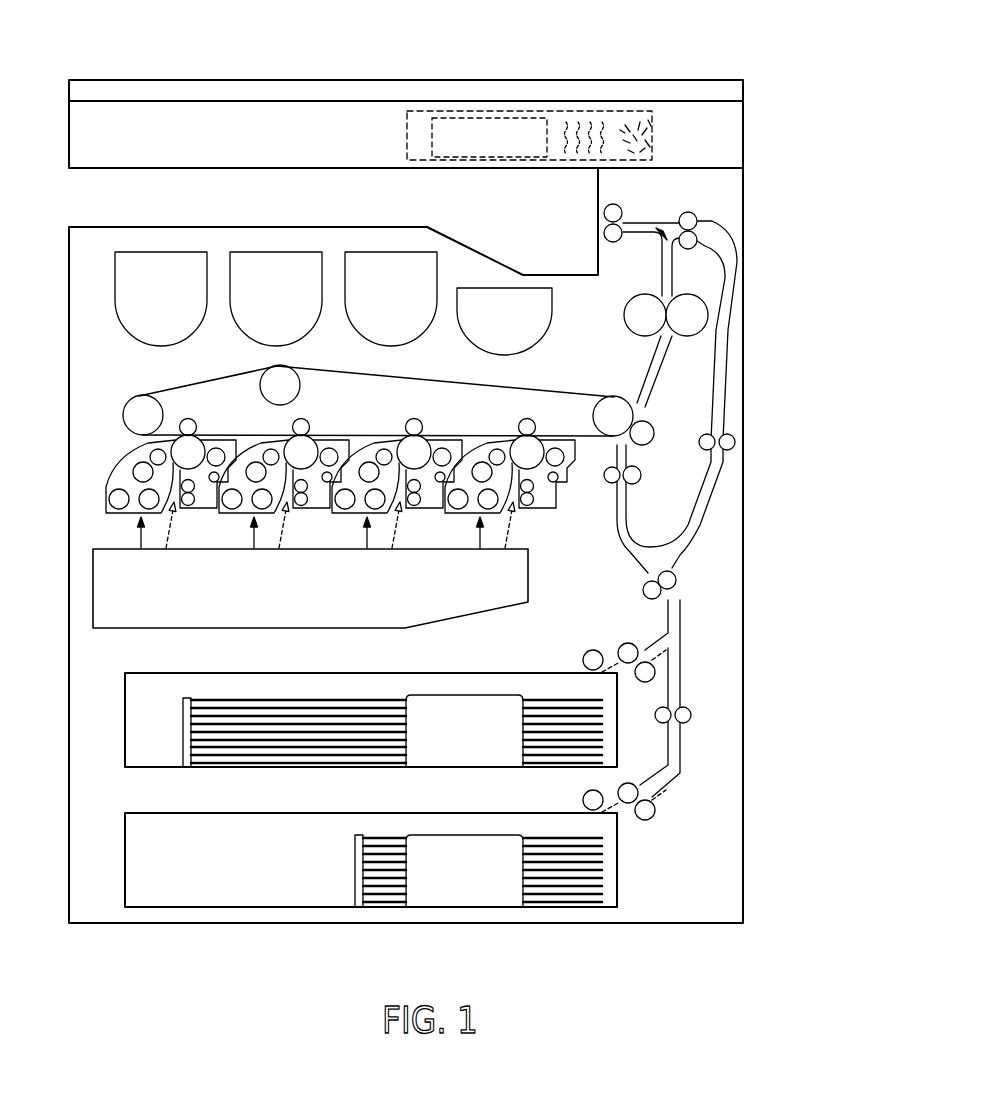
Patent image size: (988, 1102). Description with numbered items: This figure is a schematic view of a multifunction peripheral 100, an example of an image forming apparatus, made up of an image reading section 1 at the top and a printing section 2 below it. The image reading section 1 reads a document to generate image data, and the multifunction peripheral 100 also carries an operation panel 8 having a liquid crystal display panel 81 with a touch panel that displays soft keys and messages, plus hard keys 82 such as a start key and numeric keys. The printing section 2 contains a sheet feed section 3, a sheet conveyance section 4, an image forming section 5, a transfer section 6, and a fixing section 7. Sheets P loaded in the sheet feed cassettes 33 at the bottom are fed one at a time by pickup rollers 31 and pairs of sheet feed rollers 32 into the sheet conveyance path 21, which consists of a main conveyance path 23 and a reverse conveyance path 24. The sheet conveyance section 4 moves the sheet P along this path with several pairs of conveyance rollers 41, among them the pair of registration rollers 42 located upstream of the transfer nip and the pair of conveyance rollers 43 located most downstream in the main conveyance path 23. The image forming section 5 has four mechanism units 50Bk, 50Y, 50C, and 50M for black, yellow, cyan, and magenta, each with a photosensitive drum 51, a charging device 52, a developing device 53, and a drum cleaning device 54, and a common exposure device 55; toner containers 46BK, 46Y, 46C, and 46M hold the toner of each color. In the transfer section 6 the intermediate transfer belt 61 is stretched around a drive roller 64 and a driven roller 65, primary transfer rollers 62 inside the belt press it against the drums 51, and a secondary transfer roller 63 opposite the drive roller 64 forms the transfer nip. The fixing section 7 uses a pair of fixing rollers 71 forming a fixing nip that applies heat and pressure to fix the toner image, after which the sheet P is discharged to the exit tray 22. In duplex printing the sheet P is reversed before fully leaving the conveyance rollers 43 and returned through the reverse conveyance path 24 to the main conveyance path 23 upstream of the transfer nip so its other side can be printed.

The multifunction peripheral 100 is at (114, 59).
The image reading section 1 is at (754, 130).
The printing section 2 is at (754, 185).
The operation panel 8 is at (396, 131).
The liquid crystal display panel 81 is at (505, 127).
The hard keys 82 is at (588, 125).
The exit tray 22 is at (470, 248).
The conveyance rollers 41 is at (690, 212).
The pair of conveyance rollers 43 is at (605, 212).
The pair of registration rollers 42 is at (638, 474).
The toner container 46M is at (161, 299).
The toner container 46C is at (276, 299).
The toner container 46Y is at (391, 299).
The toner container 46BK is at (504, 321).
The transfer section 6 is at (565, 383).
The intermediate transfer belt 61 is at (455, 378).
The driven roller 65 is at (142, 398).
The drive roller 64 is at (600, 417).
The secondary transfer roller 63 is at (657, 424).
The primary transfer rollers 62 is at (196, 424).
The image forming section 5 is at (117, 447).
The photosensitive drum 51 is at (389, 429).
The charging device 52 is at (428, 513).
The developing device 53 is at (354, 447).
The drum cleaning device 54 is at (435, 429).
The exposure device 55 is at (505, 608).
The mechanism unit 50M is at (144, 545).
The mechanism unit 50C is at (250, 545).
The mechanism unit 50Y is at (366, 545).
The mechanism unit 50Bk is at (475, 545).
The fixing section 7 is at (612, 318).
The fixing rollers 71 is at (687, 337).
The sheet conveyance path 21 is at (686, 397).
The main conveyance path 23 is at (667, 362).
The reverse conveyance path 24 is at (727, 323).
The sheet conveyance section 4 is at (627, 591).
The sheet feed section 3 is at (578, 635).
The pickup rollers 31 is at (583, 660).
The sheet feed rollers 32 is at (645, 684).
The sheet feed cassettes 33 is at (458, 672).
The sheet P is at (195, 698).